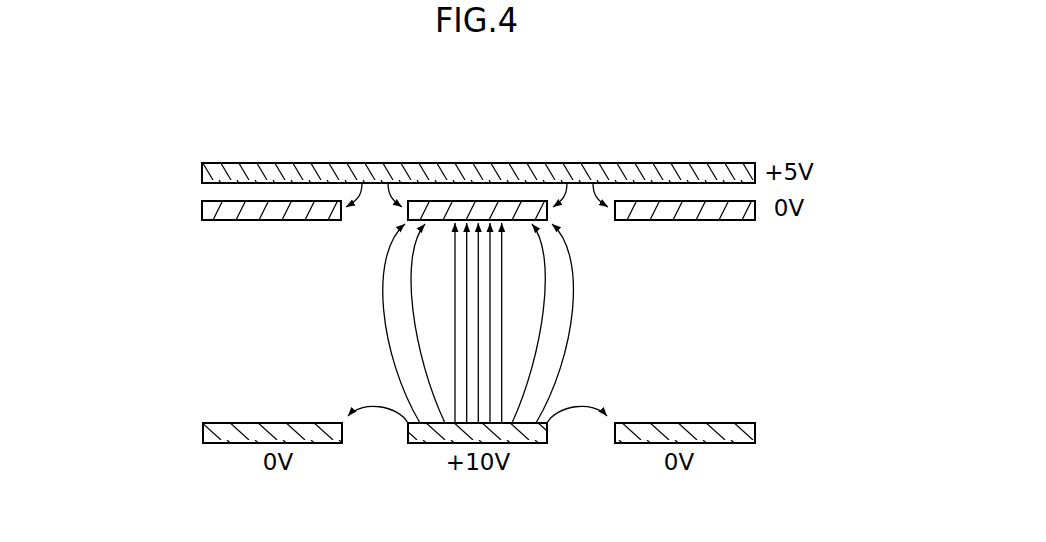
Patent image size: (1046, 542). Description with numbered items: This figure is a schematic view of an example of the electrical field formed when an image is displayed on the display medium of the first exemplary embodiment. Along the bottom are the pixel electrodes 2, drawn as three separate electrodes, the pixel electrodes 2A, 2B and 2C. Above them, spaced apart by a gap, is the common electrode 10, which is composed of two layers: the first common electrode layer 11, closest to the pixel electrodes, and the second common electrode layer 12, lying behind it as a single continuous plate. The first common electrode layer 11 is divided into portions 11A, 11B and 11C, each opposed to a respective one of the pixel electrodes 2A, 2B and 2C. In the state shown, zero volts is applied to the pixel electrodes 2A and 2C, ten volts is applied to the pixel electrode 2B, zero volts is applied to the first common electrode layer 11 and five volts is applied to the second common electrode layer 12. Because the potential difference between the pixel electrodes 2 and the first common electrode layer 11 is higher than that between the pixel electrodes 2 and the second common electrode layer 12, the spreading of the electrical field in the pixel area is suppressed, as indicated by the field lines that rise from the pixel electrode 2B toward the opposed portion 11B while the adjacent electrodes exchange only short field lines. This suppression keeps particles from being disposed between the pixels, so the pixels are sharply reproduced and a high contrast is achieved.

The common electrode 10 is at (102, 142).
The second common electrode layer 12 is at (200, 170).
The first common electrode layer 11 is at (200, 208).
The first common electrode layer 11A is at (275, 208).
The first common electrode layer 11B is at (478, 210).
The first common electrode layer 11C is at (690, 210).
The pixel electrodes 2 is at (202, 432).
The pixel electrode 2A is at (216, 431).
The pixel electrode 2B is at (422, 431).
The pixel electrode 2C is at (630, 432).